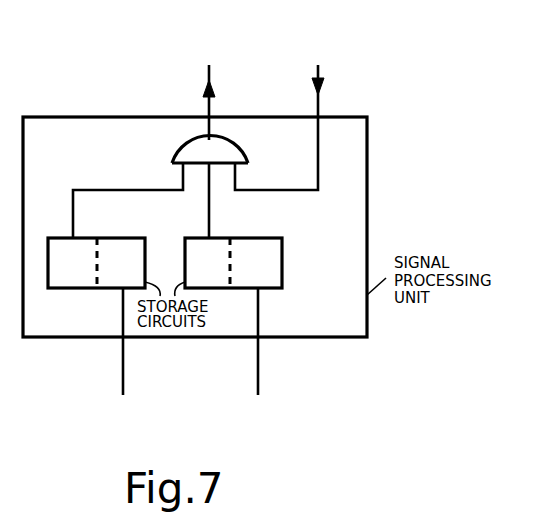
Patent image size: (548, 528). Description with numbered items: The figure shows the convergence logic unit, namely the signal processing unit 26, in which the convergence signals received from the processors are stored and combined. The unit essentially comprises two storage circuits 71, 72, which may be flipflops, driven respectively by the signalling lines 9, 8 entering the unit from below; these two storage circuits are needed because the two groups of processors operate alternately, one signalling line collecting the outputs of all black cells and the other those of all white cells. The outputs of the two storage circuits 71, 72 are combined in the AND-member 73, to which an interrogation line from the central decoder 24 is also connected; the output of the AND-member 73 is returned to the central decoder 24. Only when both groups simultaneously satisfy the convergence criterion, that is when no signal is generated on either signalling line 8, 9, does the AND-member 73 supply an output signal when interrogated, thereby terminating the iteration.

The central decoder 24 is at (322, 57).
The AND-member 73 is at (237, 147).
The storage circuit 71 is at (145, 244).
The storage circuit 72 is at (282, 244).
The signalling line 9 is at (123, 366).
The signalling line 8 is at (258, 366).
The signal processing unit 26 is at (311, 337).